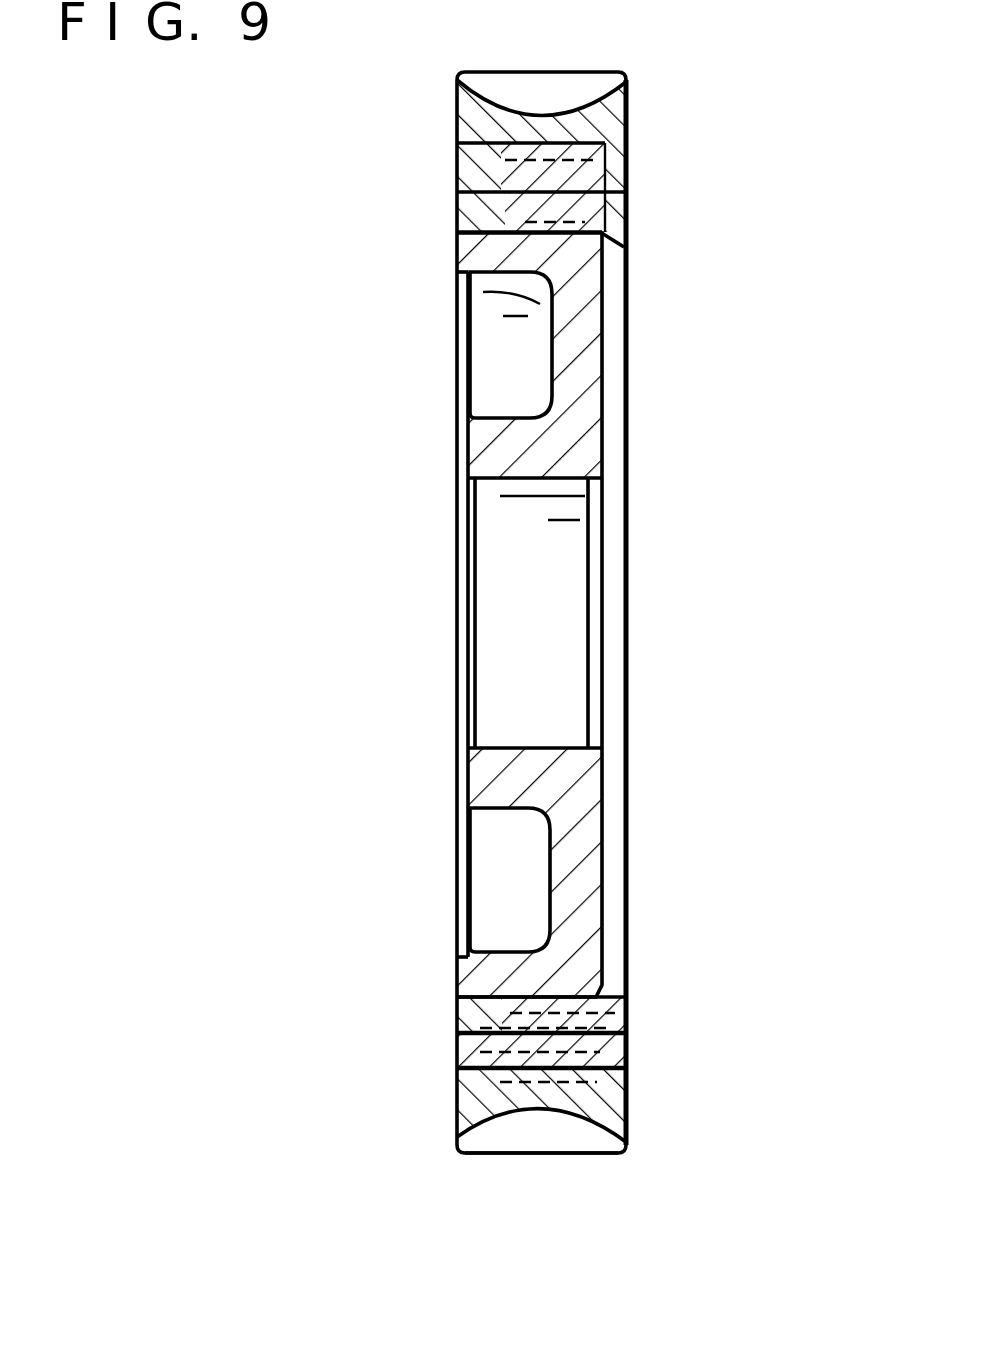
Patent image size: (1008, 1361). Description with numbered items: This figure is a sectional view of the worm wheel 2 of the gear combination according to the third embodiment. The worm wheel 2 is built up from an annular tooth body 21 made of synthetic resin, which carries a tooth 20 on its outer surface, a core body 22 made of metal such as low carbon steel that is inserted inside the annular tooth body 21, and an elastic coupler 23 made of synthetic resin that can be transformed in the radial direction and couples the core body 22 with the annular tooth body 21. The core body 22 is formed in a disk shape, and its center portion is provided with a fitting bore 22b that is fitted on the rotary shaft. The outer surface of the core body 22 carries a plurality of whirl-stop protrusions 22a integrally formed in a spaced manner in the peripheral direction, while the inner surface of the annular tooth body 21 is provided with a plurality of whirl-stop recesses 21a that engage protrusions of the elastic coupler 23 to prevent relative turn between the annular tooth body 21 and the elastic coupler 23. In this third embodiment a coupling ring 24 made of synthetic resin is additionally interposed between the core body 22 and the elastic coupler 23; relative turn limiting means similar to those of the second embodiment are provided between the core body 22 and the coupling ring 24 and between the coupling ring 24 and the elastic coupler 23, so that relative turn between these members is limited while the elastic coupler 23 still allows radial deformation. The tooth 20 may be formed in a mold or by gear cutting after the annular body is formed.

The worm wheel 2 is at (415, 1052).
The tooth 20 is at (548, 1137).
The annular tooth body 21 is at (606, 1100).
The whirl-stop recesses 21a is at (503, 1125).
The core body 22 is at (580, 857).
The whirl-stop protrusions 22a is at (610, 1028).
The fitting bore 22b is at (553, 746).
The elastic coupler 23 is at (610, 994).
The coupling ring 24 is at (605, 1049).